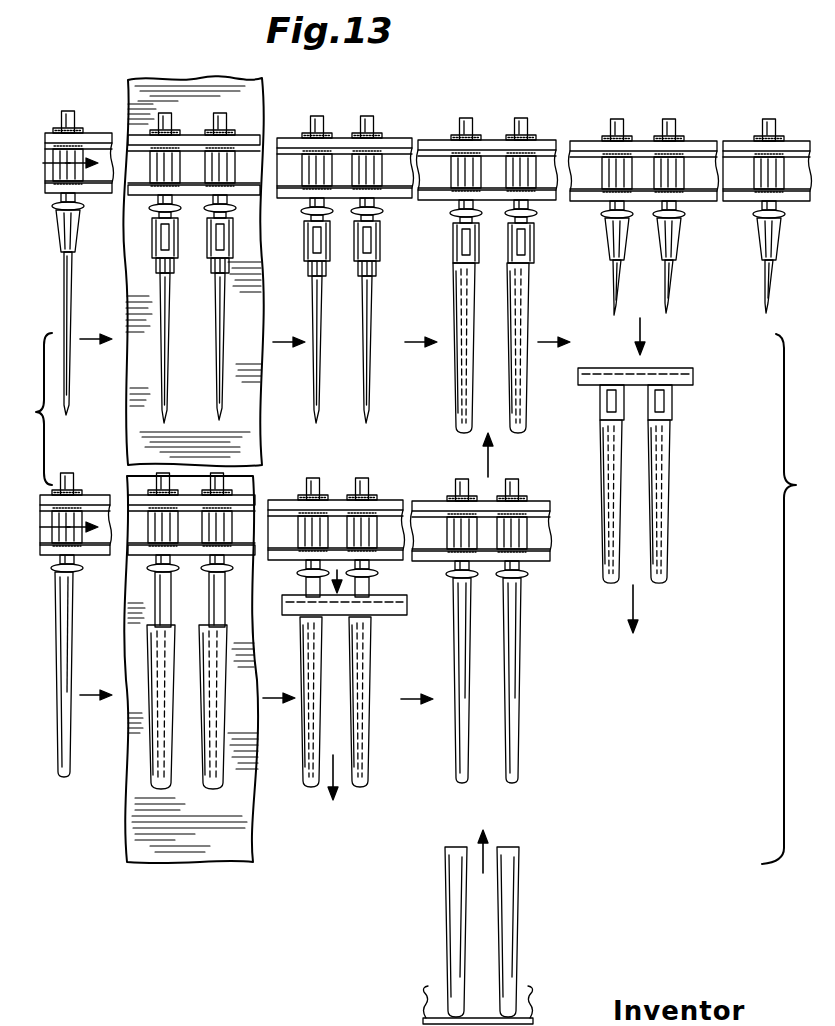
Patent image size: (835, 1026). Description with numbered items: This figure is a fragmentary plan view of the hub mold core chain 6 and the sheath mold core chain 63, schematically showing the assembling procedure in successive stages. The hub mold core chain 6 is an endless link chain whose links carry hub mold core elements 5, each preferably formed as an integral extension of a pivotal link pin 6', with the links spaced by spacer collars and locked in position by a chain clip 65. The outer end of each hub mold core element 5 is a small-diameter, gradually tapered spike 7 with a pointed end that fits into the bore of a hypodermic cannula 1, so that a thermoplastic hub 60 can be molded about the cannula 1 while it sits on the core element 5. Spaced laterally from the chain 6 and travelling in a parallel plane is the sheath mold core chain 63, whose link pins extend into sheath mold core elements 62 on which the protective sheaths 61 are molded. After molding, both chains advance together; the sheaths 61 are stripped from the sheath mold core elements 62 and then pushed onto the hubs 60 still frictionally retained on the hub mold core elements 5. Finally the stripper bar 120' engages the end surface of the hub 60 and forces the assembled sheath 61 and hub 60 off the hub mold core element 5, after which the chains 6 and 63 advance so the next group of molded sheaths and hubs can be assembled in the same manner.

The hypodermic cannula 1 is at (67, 355).
The hub mold core element 5 is at (80, 233).
The hub mold core chain 6 is at (313, 142).
The pivotal link pin 6' is at (451, 112).
The tapered spike 7 is at (66, 263).
The hub 60 is at (380, 242).
The hypodermic needle protective sheath 61 is at (452, 306).
The sheath mold core element 62 is at (66, 651).
The sheath mold core chain 63 is at (75, 493).
The chain clip 65 is at (331, 138).
The upper sheath and hub assembly stripper bar 120' is at (671, 392).